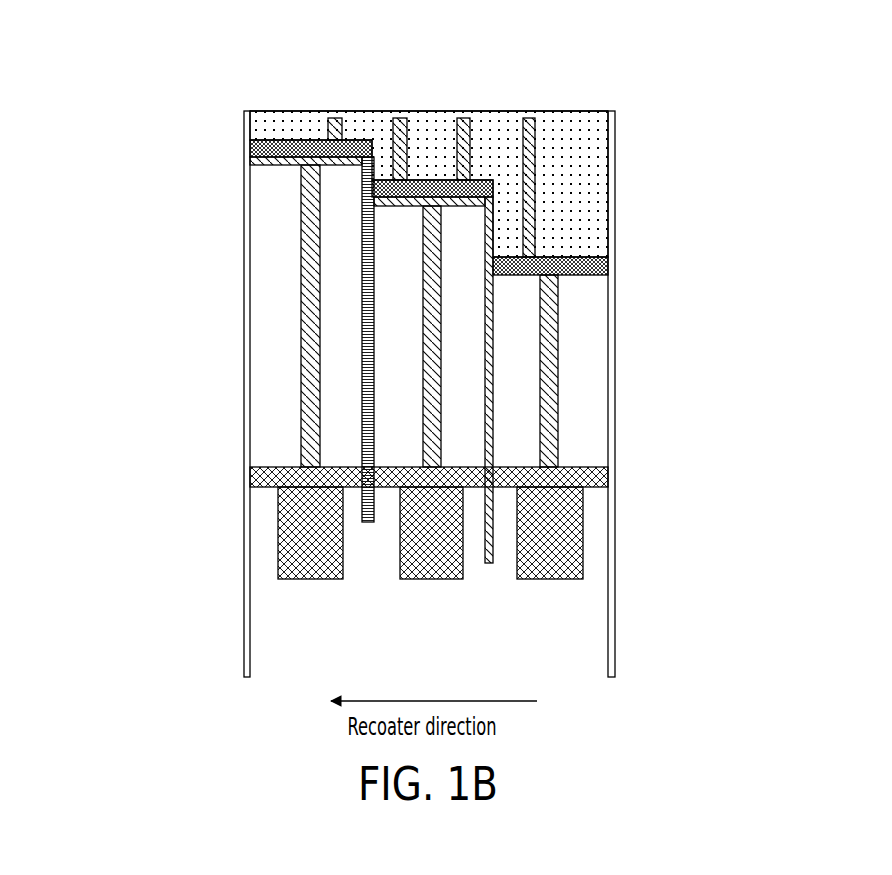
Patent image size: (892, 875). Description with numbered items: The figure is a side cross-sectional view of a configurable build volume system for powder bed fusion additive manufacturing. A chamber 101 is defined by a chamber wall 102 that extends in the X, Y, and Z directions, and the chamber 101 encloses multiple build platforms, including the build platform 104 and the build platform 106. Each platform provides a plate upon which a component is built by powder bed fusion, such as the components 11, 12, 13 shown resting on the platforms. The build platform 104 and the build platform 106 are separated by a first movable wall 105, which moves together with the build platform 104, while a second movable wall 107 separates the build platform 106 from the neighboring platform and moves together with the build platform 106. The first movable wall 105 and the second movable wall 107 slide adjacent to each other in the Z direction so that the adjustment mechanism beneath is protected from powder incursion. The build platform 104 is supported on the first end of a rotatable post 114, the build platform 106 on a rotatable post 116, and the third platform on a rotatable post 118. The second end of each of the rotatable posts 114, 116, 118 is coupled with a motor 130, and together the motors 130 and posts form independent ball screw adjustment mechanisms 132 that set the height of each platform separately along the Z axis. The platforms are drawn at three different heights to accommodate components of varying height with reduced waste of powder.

The chamber 101 is at (591, 212).
The chamber wall 102 is at (245, 220).
The build platform 104 is at (280, 136).
The build platform 106 is at (428, 176).
The component 11 is at (335, 118).
The component 12 is at (400, 118).
The component 13 is at (529, 118).
The rotatable post 114 is at (310, 378).
The first movable wall 105 is at (362, 452).
The rotatable post 116 is at (442, 358).
The second movable wall 107 is at (490, 375).
The rotatable post 118 is at (546, 392).
The motor 130 is at (546, 553).
The ball screw adjustment mechanism 132 is at (281, 310).